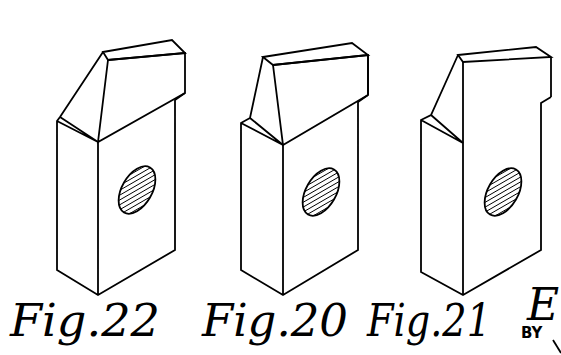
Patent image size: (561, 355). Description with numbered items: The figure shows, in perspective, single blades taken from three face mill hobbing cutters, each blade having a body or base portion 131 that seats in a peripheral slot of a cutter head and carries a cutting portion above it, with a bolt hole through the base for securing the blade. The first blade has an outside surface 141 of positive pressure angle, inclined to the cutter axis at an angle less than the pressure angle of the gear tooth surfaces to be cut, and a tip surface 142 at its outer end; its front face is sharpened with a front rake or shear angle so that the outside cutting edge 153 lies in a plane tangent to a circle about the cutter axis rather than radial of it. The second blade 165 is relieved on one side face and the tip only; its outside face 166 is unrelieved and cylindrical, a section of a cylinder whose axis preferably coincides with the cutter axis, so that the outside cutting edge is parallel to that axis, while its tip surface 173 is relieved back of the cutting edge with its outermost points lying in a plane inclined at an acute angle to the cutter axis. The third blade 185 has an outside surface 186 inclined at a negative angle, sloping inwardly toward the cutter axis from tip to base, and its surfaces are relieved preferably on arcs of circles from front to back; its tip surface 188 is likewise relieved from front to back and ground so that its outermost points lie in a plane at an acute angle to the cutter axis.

In FIG. 22, the cutting blade 185 is at (70, 228).
In FIG. 22, the outside surface 186 is at (141, 97).
In FIG. 22, the tip surface 188 is at (132, 51).
In FIG. 20, the body or base portion 131 is at (249, 210).
In FIG. 20, the outside surface 141 is at (347, 72).
In FIG. 20, the tip surface 142 is at (272, 62).
In FIG. 20, the outside cutting edge 153 is at (277, 98).
In FIG. 21, the blade 165 is at (431, 212).
In FIG. 21, the outside face 166 is at (507, 176).
In FIG. 21, the tip surface 173 is at (486, 53).